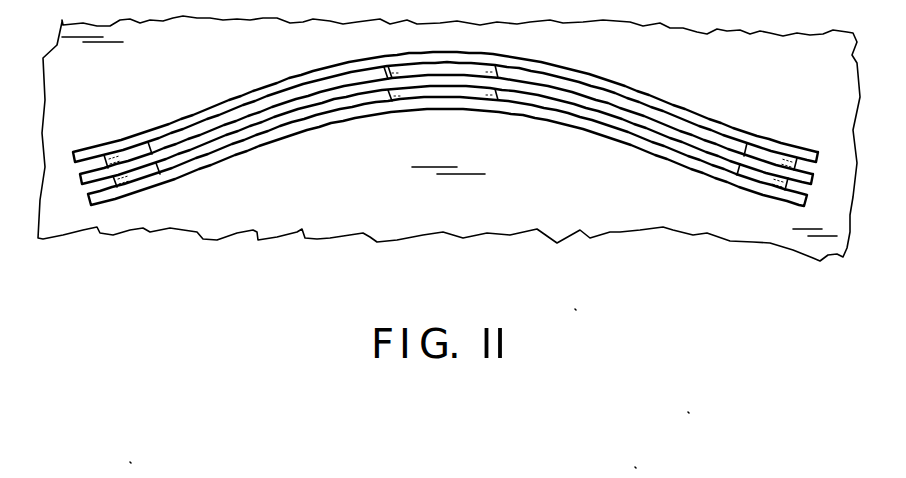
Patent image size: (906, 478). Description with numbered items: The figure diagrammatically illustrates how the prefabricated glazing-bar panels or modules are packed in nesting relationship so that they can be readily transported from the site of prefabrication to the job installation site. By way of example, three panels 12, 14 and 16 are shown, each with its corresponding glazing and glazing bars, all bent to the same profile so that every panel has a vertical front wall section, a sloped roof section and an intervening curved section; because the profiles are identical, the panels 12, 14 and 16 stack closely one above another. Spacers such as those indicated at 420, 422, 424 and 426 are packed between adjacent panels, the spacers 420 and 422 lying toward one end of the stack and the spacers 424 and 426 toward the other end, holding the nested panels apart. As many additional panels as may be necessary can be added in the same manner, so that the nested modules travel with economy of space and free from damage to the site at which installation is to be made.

The panel 12 is at (447, 151).
The panel 14 is at (446, 129).
The panel 16 is at (445, 105).
The spacer 420 is at (128, 133).
The spacer 422 is at (163, 196).
The spacer 424 is at (788, 135).
The spacer 426 is at (751, 199).